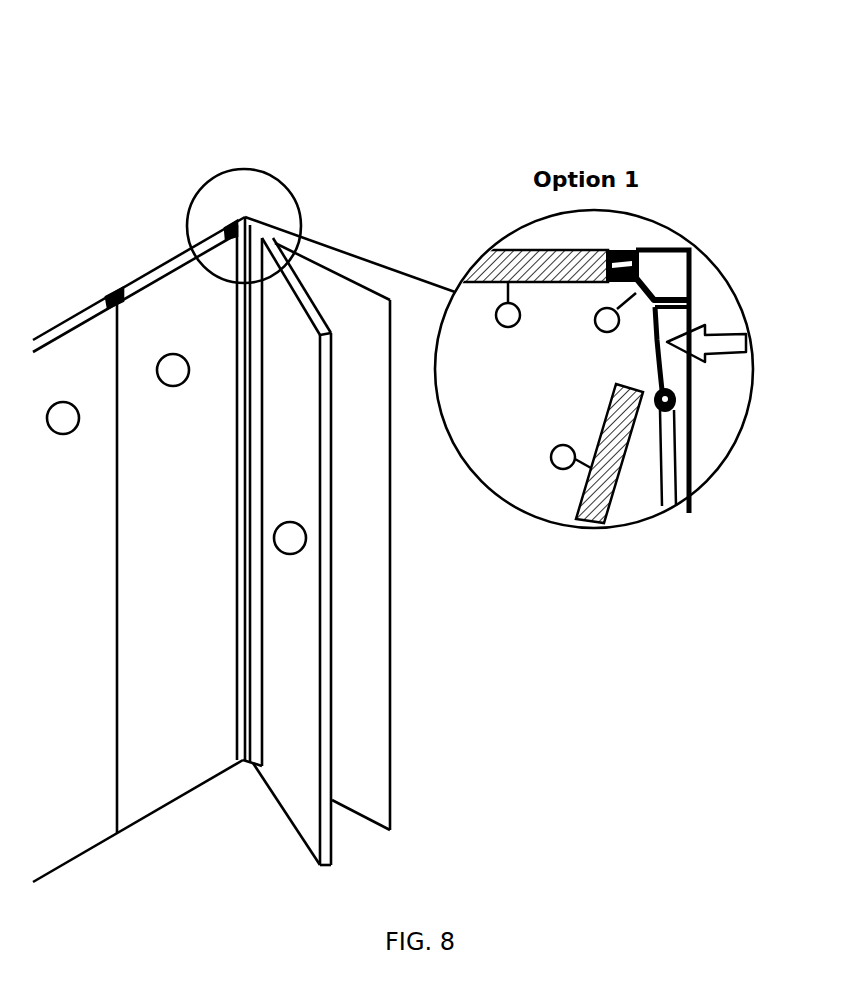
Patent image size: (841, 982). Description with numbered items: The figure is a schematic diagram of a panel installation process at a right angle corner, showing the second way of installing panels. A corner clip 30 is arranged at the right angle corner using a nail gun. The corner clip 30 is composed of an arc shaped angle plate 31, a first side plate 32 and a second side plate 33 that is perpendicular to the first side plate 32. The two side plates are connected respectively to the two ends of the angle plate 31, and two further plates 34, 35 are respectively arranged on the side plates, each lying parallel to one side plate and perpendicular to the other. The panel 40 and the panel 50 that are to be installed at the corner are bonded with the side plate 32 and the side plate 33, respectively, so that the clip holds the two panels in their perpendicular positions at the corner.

The corner clip 30 is at (657, 285).
The arc shaped angle plate 31 is at (645, 297).
The first side plate 32 is at (636, 275).
The second side plate 33 is at (664, 318).
The further plate 34 is at (600, 250).
The further plate 35 is at (677, 410).
The panel 40 is at (510, 252).
The panel 50 is at (618, 494).